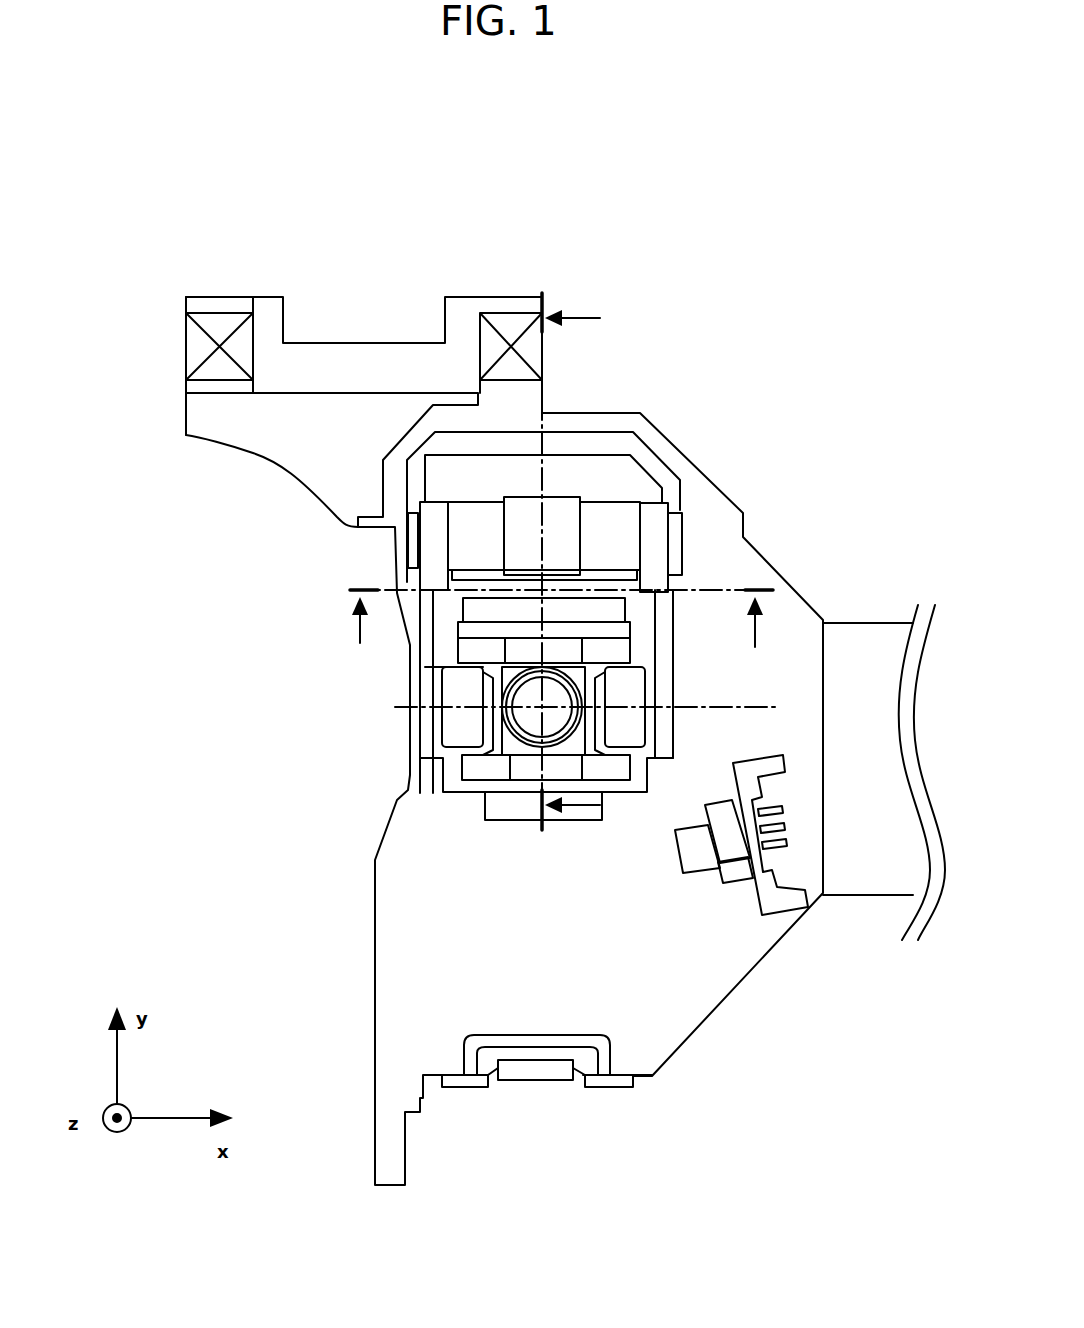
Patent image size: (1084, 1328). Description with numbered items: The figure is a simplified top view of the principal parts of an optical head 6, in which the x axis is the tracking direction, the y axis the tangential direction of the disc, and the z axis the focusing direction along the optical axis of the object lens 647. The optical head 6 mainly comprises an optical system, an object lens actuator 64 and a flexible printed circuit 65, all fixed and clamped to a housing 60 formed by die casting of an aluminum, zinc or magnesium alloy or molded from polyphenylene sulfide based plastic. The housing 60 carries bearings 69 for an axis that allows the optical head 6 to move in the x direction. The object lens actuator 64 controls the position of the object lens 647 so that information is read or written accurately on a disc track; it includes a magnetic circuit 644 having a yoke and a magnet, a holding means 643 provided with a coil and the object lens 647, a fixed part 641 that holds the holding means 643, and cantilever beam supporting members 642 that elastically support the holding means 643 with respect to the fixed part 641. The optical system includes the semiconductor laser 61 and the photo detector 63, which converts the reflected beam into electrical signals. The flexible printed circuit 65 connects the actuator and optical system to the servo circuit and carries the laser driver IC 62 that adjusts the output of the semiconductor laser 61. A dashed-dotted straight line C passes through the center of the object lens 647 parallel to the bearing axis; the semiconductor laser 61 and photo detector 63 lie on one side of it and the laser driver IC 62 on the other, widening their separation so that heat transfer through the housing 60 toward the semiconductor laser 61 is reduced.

The optical head 6 is at (838, 168).
The housing 60 is at (197, 430).
The semiconductor laser 61 is at (708, 847).
The laser driver IC 62 is at (560, 532).
The photo detector 63 is at (538, 1072).
The object lens actuator 64 is at (223, 565).
The fixed part 641 is at (427, 537).
The cantilever beam supporting members 642 is at (655, 612).
The holding means 643 is at (460, 720).
The magnetic circuit 644 is at (473, 767).
The object lens 647 is at (562, 722).
The flexible printed circuit 65 is at (863, 645).
The bearings 69 is at (217, 347).